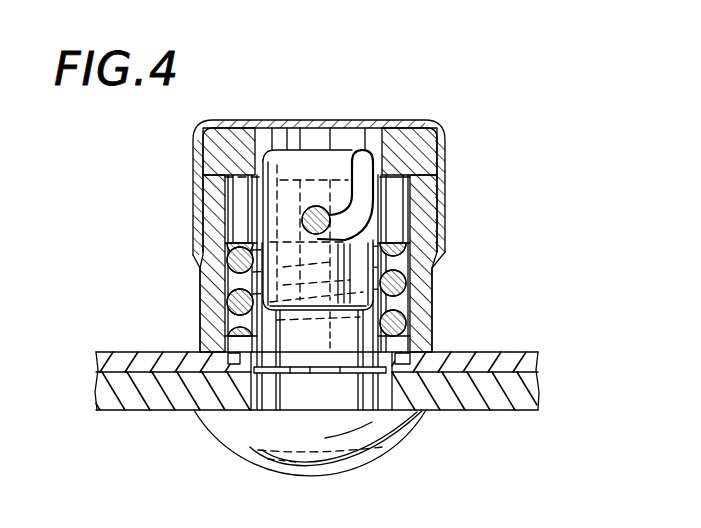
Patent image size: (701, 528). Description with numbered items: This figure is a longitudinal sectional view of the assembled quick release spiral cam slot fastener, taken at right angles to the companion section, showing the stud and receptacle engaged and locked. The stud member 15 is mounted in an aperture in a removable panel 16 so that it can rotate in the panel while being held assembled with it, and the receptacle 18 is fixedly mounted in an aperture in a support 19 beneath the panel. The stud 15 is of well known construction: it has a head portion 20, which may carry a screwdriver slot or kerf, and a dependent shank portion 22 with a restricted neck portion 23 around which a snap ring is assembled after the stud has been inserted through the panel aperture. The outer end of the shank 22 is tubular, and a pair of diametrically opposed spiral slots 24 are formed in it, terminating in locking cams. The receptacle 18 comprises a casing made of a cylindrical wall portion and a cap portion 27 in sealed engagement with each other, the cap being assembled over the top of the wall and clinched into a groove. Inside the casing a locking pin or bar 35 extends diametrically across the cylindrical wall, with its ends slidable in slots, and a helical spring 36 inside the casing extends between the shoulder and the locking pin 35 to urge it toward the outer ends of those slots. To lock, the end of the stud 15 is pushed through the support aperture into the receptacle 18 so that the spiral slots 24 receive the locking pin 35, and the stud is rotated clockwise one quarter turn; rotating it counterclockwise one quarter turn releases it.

The stud member 15 is at (341, 331).
The panel 16 is at (150, 403).
The receptacle 18 is at (328, 223).
The support 19 is at (497, 352).
The head portion 20 is at (248, 438).
The shank portion 22 is at (263, 193).
The neck portion 23 is at (322, 359).
The spiral slots 24 is at (366, 205).
The cap portion 27 is at (413, 122).
The locking pin or bar 35 is at (306, 207).
The helical spring 36 is at (236, 298).